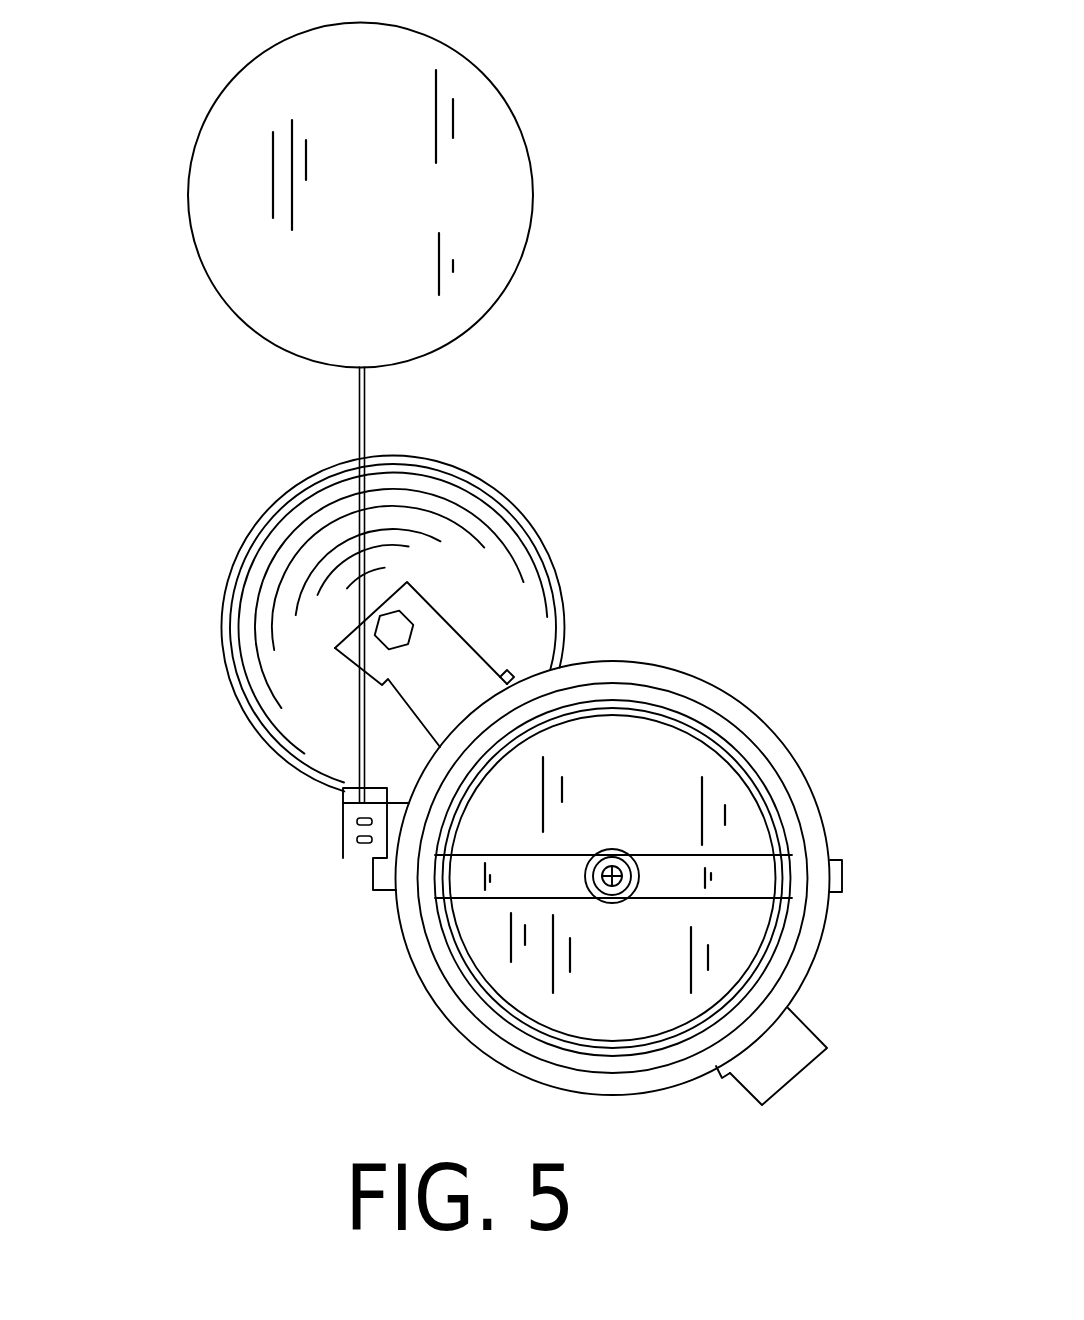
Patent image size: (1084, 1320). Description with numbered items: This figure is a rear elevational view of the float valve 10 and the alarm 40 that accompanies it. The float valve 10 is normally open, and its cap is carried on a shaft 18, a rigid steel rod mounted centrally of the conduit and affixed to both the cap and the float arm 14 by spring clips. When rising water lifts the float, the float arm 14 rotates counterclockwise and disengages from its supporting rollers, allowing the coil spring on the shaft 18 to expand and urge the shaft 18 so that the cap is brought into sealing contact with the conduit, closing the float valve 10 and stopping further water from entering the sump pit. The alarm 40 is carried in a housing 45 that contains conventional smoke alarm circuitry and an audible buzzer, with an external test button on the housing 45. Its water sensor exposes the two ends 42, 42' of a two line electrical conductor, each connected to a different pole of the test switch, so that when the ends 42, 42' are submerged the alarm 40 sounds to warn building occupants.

The float valve 10 is at (661, 838).
The float arm 14 is at (785, 1050).
The shaft 18 is at (608, 883).
The alarm 40 is at (336, 533).
The end of two line electrical conductor 42 is at (306, 876).
The end of two line electrical conductor 42' is at (345, 939).
The housing 45 is at (508, 162).